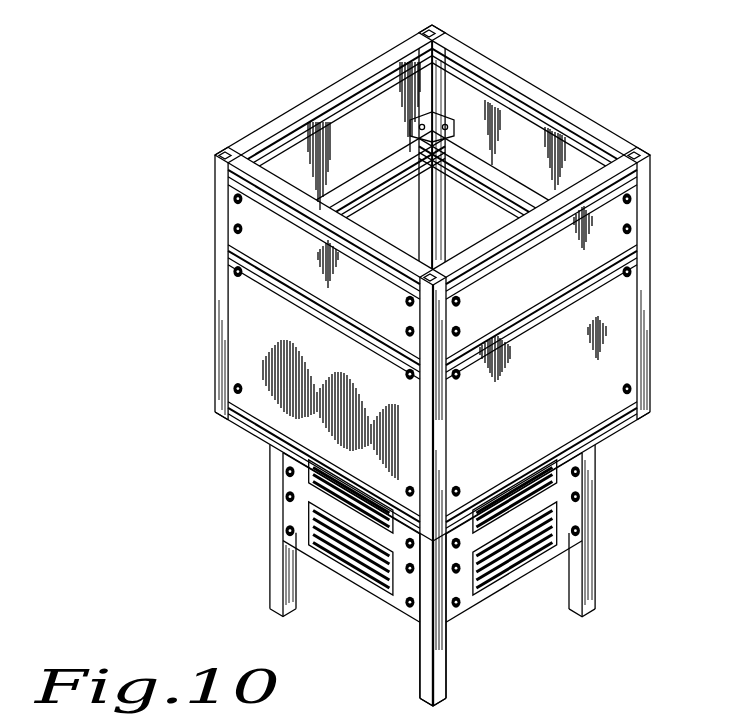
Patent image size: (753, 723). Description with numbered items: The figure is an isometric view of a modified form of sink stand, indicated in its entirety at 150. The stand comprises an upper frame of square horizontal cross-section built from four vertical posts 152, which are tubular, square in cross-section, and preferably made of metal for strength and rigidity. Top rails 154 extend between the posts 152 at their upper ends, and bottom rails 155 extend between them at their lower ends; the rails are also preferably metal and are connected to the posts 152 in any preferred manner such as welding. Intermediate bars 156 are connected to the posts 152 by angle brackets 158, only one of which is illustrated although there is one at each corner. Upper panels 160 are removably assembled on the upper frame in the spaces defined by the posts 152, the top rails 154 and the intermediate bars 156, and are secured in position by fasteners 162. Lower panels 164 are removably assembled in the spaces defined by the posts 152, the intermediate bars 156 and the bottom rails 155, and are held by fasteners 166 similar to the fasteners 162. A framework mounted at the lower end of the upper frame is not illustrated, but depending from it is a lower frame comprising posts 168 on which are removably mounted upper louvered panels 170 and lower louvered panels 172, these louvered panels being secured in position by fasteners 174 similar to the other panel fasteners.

The modified sink stand 150 is at (210, 358).
The vertical posts 152 is at (444, 31).
The top rails 154 is at (354, 70).
The bottom rails 155 is at (252, 428).
The intermediate bars 156 is at (507, 173).
The angle brackets 158 is at (440, 124).
The upper panels 160 is at (244, 237).
The fasteners 162 is at (405, 301).
The lower panels 164 is at (345, 392).
The fasteners 166 is at (459, 375).
The posts 168 is at (268, 573).
The upper louvered panels 170 is at (578, 480).
The lower louvered panels 172 is at (340, 550).
The fasteners 174 is at (284, 475).